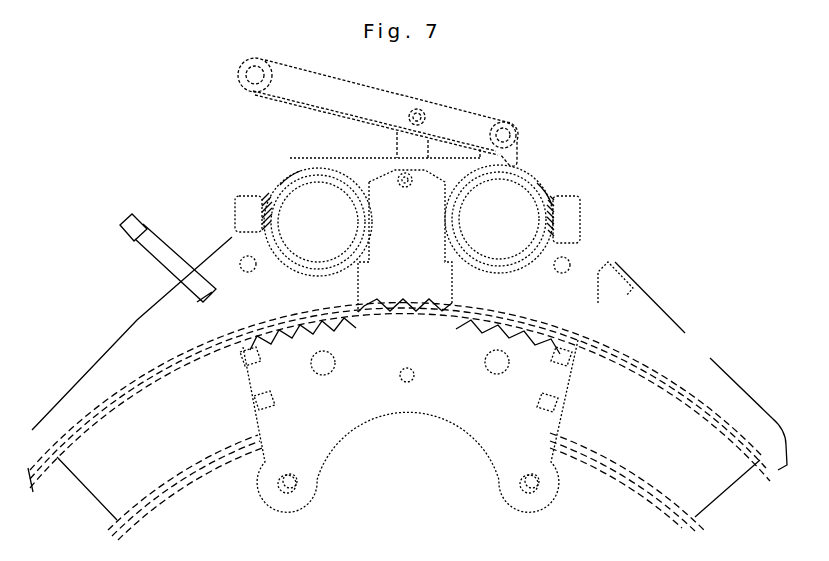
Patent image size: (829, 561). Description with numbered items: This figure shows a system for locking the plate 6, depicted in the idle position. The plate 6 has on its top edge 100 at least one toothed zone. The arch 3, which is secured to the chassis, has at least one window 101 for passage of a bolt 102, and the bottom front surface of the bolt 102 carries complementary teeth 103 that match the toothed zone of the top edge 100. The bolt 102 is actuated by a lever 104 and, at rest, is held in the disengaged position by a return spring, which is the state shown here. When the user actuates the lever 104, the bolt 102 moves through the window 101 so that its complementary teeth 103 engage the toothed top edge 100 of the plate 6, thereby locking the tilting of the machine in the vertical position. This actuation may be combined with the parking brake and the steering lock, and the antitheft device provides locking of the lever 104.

The arch 3 is at (660, 370).
The plate 6 is at (490, 447).
The top edge 100 is at (478, 328).
The window 101 is at (360, 310).
The bolt 102 is at (420, 258).
The complementary teeth 103 is at (413, 303).
The lever 104 is at (312, 100).